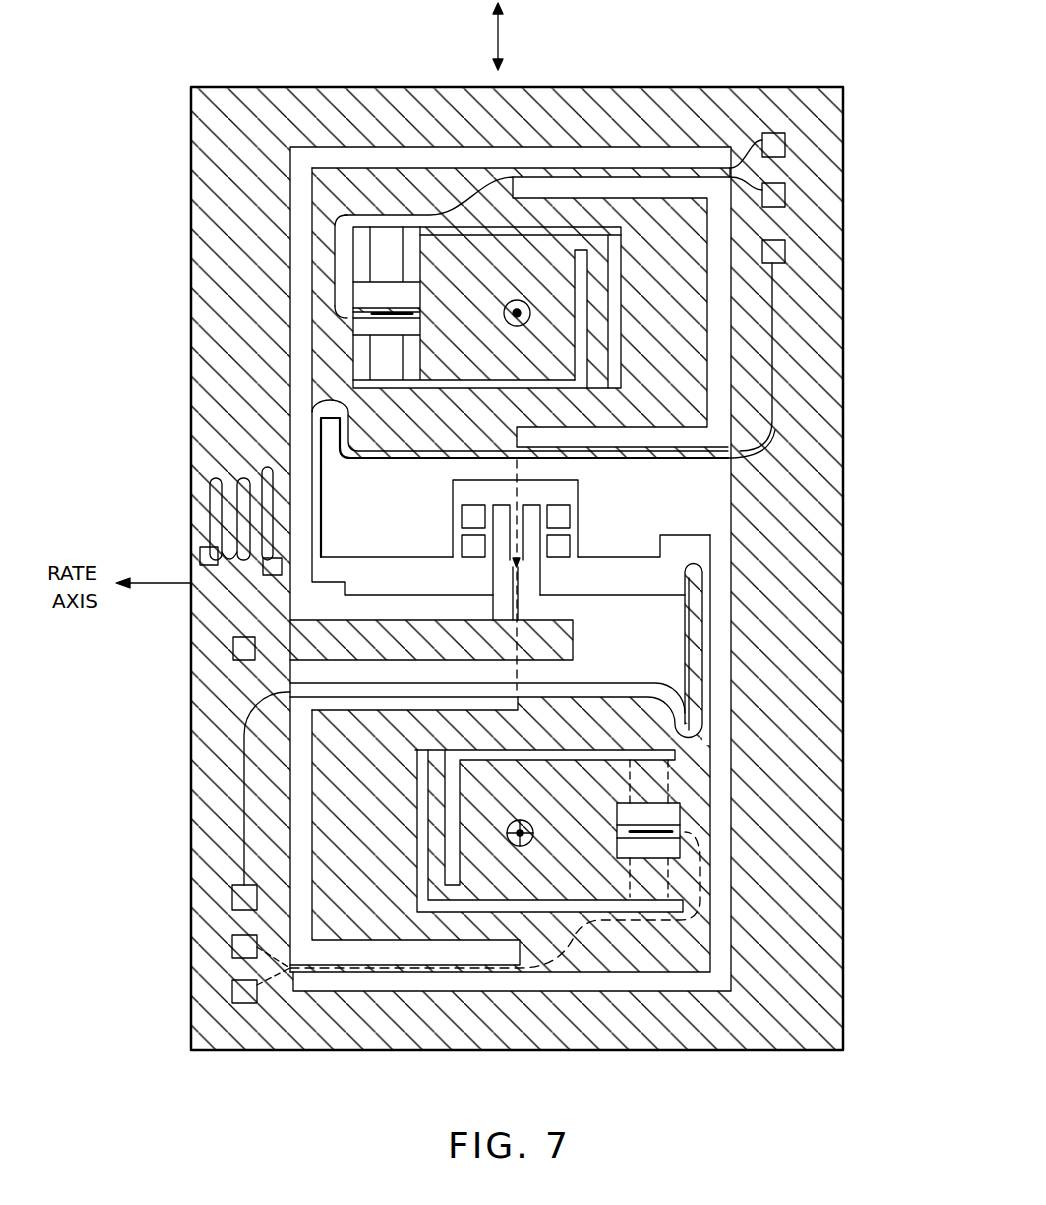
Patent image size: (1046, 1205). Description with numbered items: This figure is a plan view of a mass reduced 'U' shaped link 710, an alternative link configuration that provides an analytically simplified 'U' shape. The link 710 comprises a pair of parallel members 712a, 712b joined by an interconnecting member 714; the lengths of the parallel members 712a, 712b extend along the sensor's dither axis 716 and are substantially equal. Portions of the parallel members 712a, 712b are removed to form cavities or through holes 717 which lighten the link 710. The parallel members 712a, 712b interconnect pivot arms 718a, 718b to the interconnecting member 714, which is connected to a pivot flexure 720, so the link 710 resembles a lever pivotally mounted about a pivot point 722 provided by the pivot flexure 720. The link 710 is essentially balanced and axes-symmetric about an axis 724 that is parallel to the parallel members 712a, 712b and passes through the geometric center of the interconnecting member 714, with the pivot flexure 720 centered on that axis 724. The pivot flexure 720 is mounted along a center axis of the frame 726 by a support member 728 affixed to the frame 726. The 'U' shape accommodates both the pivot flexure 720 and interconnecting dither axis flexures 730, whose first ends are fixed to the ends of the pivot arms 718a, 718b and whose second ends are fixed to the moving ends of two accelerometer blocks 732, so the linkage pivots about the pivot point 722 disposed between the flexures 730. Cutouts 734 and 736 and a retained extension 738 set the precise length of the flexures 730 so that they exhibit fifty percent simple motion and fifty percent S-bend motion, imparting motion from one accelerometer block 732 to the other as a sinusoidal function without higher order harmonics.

The mass reduced 'U' shaped link 710 is at (656, 518).
The parallel member 712a is at (452, 512).
The parallel member 712b is at (585, 490).
The interconnecting member 714 is at (490, 480).
The dither axis 716 is at (510, 44).
The cavities or through holes 717 is at (580, 540).
The pivot arm 718a is at (418, 555).
The pivot arm 718b is at (623, 595).
The pivot flexure 720 is at (515, 567).
The pivot point 722 is at (522, 590).
The axis 724 is at (513, 630).
The frame 726 is at (845, 985).
The support member 728 is at (327, 620).
The interconnecting dither axis flexures 730 is at (310, 405).
The accelerometer blocks 732 is at (300, 283).
The cutout 734 is at (290, 593).
The cutout 736 is at (700, 578).
The extension 738 is at (697, 528).